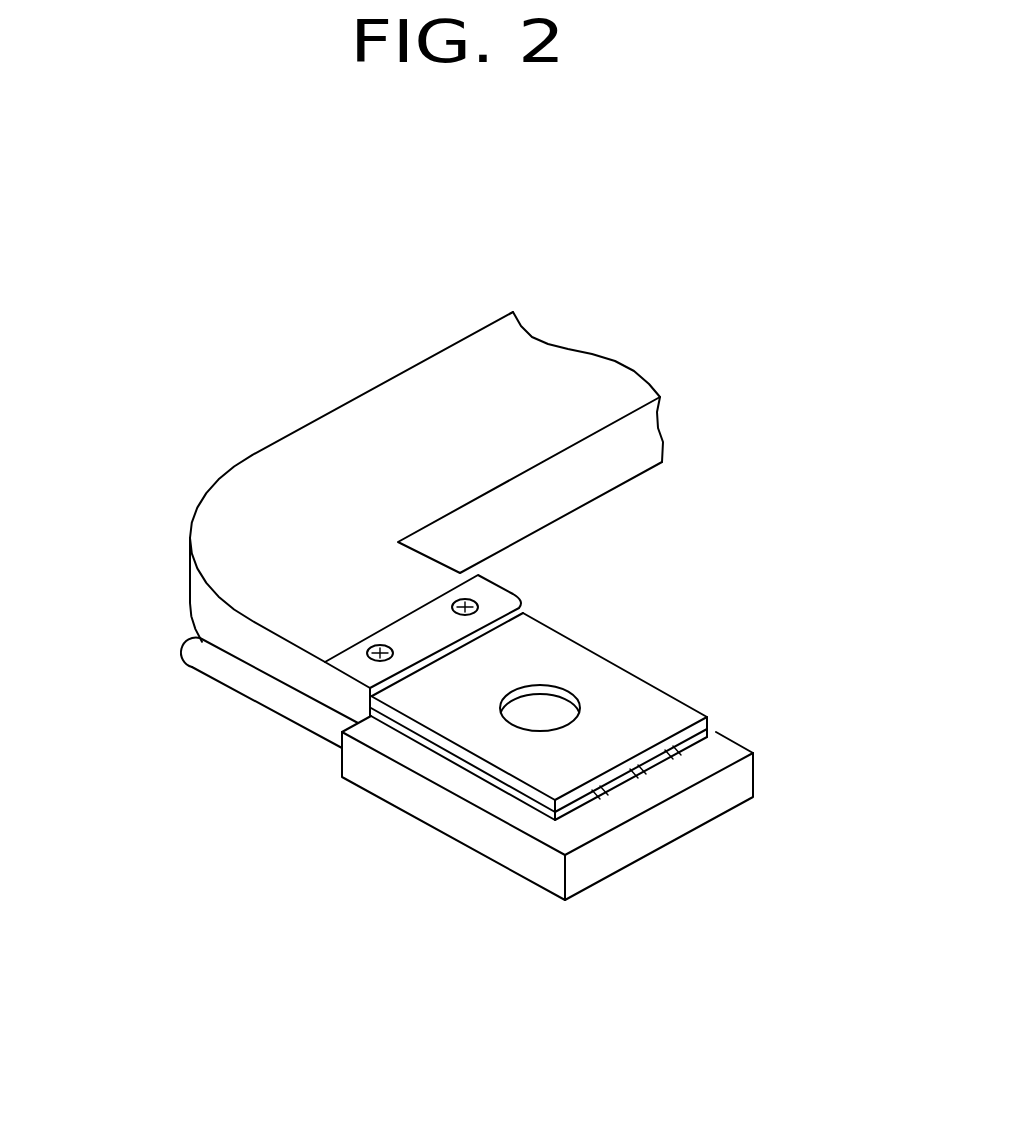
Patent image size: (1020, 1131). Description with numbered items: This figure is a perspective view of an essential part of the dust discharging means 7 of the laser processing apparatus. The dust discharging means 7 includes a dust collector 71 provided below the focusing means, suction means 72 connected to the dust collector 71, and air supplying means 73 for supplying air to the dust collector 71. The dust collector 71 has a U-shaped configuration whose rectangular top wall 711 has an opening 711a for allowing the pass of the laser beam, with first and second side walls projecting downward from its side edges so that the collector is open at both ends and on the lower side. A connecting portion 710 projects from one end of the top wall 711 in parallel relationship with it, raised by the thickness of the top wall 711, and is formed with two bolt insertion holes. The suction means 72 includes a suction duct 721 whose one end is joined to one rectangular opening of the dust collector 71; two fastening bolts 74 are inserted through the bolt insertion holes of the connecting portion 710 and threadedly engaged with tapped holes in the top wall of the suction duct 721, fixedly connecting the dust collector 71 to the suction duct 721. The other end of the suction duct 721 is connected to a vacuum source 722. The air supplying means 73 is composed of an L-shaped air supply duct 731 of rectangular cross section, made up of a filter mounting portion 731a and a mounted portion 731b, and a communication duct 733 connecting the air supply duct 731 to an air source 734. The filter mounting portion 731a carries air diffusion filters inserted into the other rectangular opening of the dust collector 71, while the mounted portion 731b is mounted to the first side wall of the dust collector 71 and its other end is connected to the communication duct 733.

The dust discharging means 7 is at (752, 465).
The dust collector 71 is at (632, 668).
The connecting portion 710 is at (487, 600).
The top wall 711 is at (658, 707).
The opening 711a is at (541, 703).
The suction means 72 is at (419, 323).
The suction duct 721 is at (233, 459).
The vacuum source 722 is at (607, 347).
The air supplying means 73 is at (378, 822).
The air supply duct 731 is at (533, 886).
The filter mounting portion 731a is at (650, 833).
The mounted portion 731b is at (490, 835).
The communication duct 733 is at (238, 678).
The air source 734 is at (190, 644).
The fastening bolts 74 is at (373, 650).